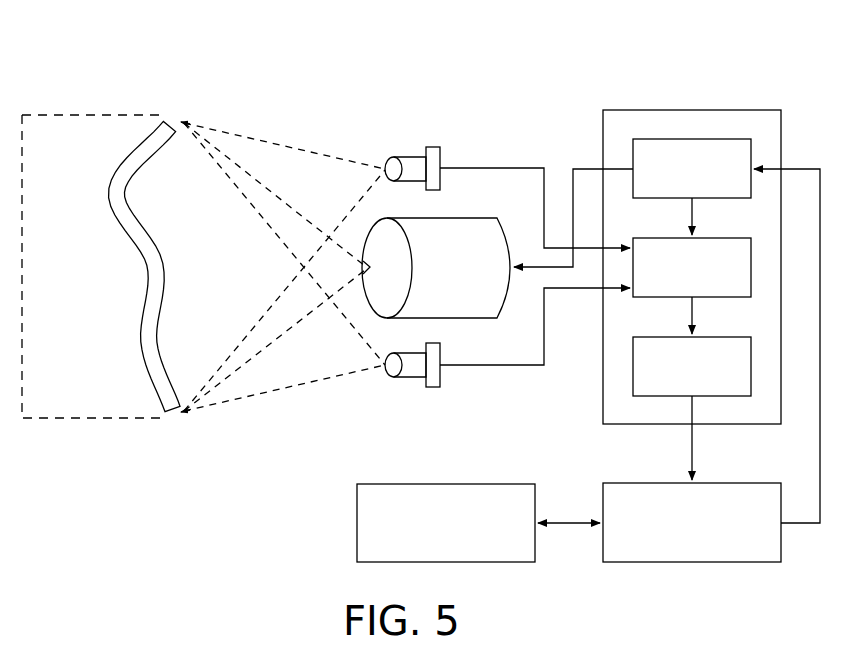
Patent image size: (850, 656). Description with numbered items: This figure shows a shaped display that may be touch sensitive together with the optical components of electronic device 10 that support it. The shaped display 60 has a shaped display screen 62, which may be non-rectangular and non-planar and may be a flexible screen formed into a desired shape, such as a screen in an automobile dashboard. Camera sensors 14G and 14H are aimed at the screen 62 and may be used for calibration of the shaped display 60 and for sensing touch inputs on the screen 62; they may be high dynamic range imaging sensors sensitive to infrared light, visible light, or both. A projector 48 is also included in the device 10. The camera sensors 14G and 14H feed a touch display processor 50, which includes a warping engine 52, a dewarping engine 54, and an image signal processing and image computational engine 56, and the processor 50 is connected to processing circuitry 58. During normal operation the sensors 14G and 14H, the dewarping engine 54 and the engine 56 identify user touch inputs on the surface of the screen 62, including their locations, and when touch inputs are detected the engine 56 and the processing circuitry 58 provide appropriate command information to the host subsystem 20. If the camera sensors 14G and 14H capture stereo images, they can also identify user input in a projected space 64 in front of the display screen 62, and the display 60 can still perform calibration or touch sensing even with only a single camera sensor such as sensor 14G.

The electronic device 10 is at (758, 66).
The shaped display 60 is at (94, 66).
The projected space 64 is at (72, 117).
The shaped display screen 62 is at (154, 264).
The camera sensor 14G is at (415, 162).
The camera sensor 14H is at (415, 376).
The projector 48 is at (464, 222).
The touch display processor 50 is at (643, 112).
The warping engine 52 is at (663, 198).
The dewarping engine 54 is at (720, 240).
The image signal processing (ISP) and image computational (ICE) engine 56 is at (720, 340).
The processing circuitry 58 is at (654, 489).
The host subsystem 20 is at (407, 489).